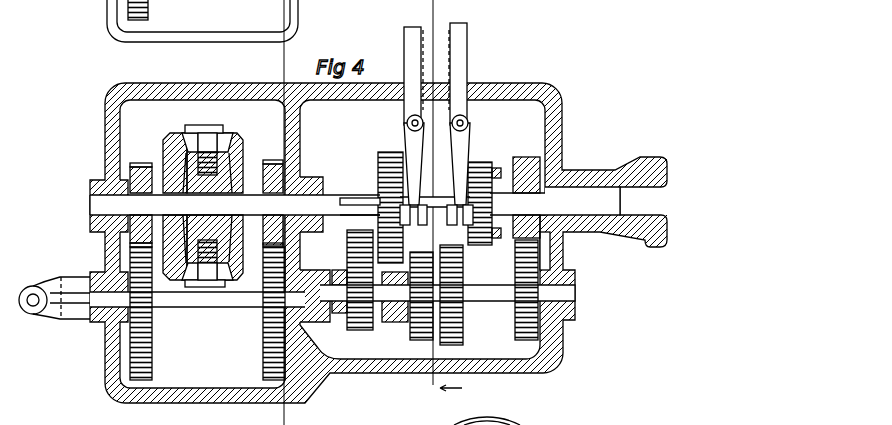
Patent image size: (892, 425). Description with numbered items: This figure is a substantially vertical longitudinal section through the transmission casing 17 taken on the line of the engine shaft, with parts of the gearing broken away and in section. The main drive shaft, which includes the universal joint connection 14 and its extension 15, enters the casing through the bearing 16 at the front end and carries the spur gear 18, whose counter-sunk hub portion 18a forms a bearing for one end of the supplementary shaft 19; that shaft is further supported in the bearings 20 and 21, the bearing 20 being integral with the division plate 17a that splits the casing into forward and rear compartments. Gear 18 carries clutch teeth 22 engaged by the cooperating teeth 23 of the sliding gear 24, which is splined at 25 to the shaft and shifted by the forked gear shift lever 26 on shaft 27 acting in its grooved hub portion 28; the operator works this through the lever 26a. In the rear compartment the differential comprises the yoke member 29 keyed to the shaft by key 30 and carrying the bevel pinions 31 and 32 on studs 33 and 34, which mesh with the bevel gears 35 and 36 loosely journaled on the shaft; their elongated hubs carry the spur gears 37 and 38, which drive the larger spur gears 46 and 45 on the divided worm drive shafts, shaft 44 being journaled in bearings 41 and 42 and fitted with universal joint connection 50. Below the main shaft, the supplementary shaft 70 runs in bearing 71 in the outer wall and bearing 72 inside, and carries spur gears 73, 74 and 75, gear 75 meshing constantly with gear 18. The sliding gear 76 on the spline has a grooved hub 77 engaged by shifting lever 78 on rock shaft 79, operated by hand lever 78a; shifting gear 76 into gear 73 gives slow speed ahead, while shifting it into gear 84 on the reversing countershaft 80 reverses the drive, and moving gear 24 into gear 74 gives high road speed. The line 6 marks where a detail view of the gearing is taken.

The section line 6 is at (445, 396).
The universal joint connection 14 is at (622, 235).
The main drive shaft extension 15 is at (600, 203).
The bearing 16 is at (570, 234).
The transmission casing 17 is at (218, 85).
The division plate 17a is at (302, 121).
The spur gear 18 is at (546, 152).
The counter-sunk hub portion 18a is at (566, 166).
The supplementary shaft 19 is at (342, 197).
The bearing 20 is at (308, 178).
The bearing 21 is at (93, 186).
The clutch teeth 22 is at (522, 238).
The cooperating clutch teeth 23 is at (489, 162).
The sliding gear 24 is at (480, 140).
The spline 25 is at (339, 268).
The gear shift lever 26 is at (468, 140).
The gear shift lever 26a is at (468, 45).
The shaft 27 is at (452, 122).
The grooved hub portion 28 is at (455, 226).
The yoke member 29 is at (164, 140).
The key 30 is at (198, 213).
The bevel pinion 31 is at (186, 131).
The bevel pinion 32 is at (225, 277).
The stud 33 is at (211, 126).
The stud 34 is at (207, 281).
The bevel gear 35 is at (163, 152).
The bevel gear 36 is at (241, 136).
The spur gear 37 is at (130, 170).
The spur gear 38 is at (273, 160).
The bearing 41 is at (102, 326).
The bearing 42 is at (312, 309).
The worm drive shaft 44 is at (207, 308).
The spur gear 45 is at (263, 352).
The spur gear 46 is at (152, 368).
The universal joint connection 50 is at (38, 272).
The supplementary shaft 70 is at (578, 296).
The bearing 71 is at (575, 318).
The bearing 72 is at (395, 323).
The spur gear 73 is at (431, 336).
The spur gear 74 is at (460, 302).
The spur gear 75 is at (538, 350).
The sliding gear 76 is at (390, 152).
The grooved hub 77 is at (413, 227).
The shifting lever 78 is at (421, 170).
The hand lever 78a is at (416, 28).
The rock shaft 79 is at (407, 121).
The countershaft 80 is at (347, 218).
The spur gear 84 is at (347, 262).